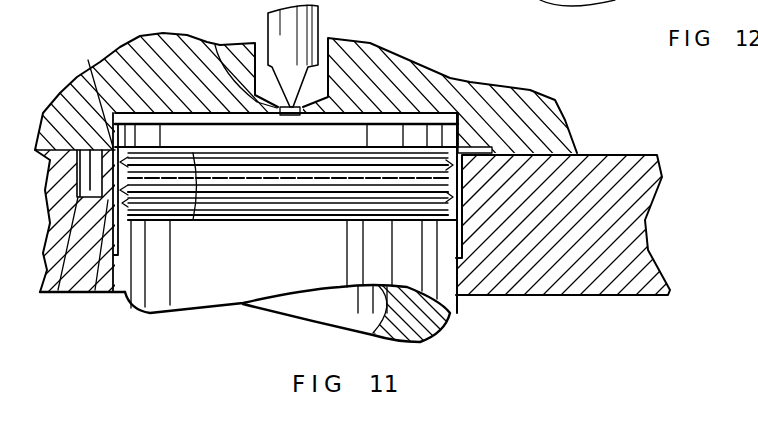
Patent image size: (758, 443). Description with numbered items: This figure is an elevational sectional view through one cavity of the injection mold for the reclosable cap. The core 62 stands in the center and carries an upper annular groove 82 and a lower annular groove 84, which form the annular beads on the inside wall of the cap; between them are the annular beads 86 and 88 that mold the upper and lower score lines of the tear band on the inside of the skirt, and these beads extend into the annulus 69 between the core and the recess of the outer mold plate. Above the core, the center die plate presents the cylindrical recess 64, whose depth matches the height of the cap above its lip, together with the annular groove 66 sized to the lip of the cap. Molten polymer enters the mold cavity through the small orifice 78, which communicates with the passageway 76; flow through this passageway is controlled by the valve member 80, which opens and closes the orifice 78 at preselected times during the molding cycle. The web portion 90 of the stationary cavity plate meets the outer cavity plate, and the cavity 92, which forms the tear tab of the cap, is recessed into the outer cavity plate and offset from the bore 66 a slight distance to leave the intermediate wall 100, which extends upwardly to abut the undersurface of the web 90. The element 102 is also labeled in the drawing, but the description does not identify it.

In FIG. 11, the core 62 is at (457, 297).
In FIG. 11, the cylindrical recess 64 is at (462, 117).
In FIG. 11, the annular groove 66 is at (498, 145).
In FIG. 11, the annulus 69 is at (128, 247).
In FIG. 11, the passageway 76 is at (327, 72).
In FIG. 11, the orifice 78 is at (215, 45).
In FIG. 11, the valve member 80 is at (310, 23).
In FIG. 11, the upper annular groove 82 is at (192, 165).
In FIG. 11, the lower annular groove 84 is at (348, 203).
In FIG. 11, the annular bead 86 is at (268, 172).
In FIG. 11, the annular bead 88 is at (310, 195).
In FIG. 11, the web portion 90 is at (88, 60).
In FIG. 11, the cavity 92 is at (55, 297).
In FIG. 11, the intermediate wall 100 is at (95, 297).
In FIG. 12, the fig 12 component 102 is at (477, 0).